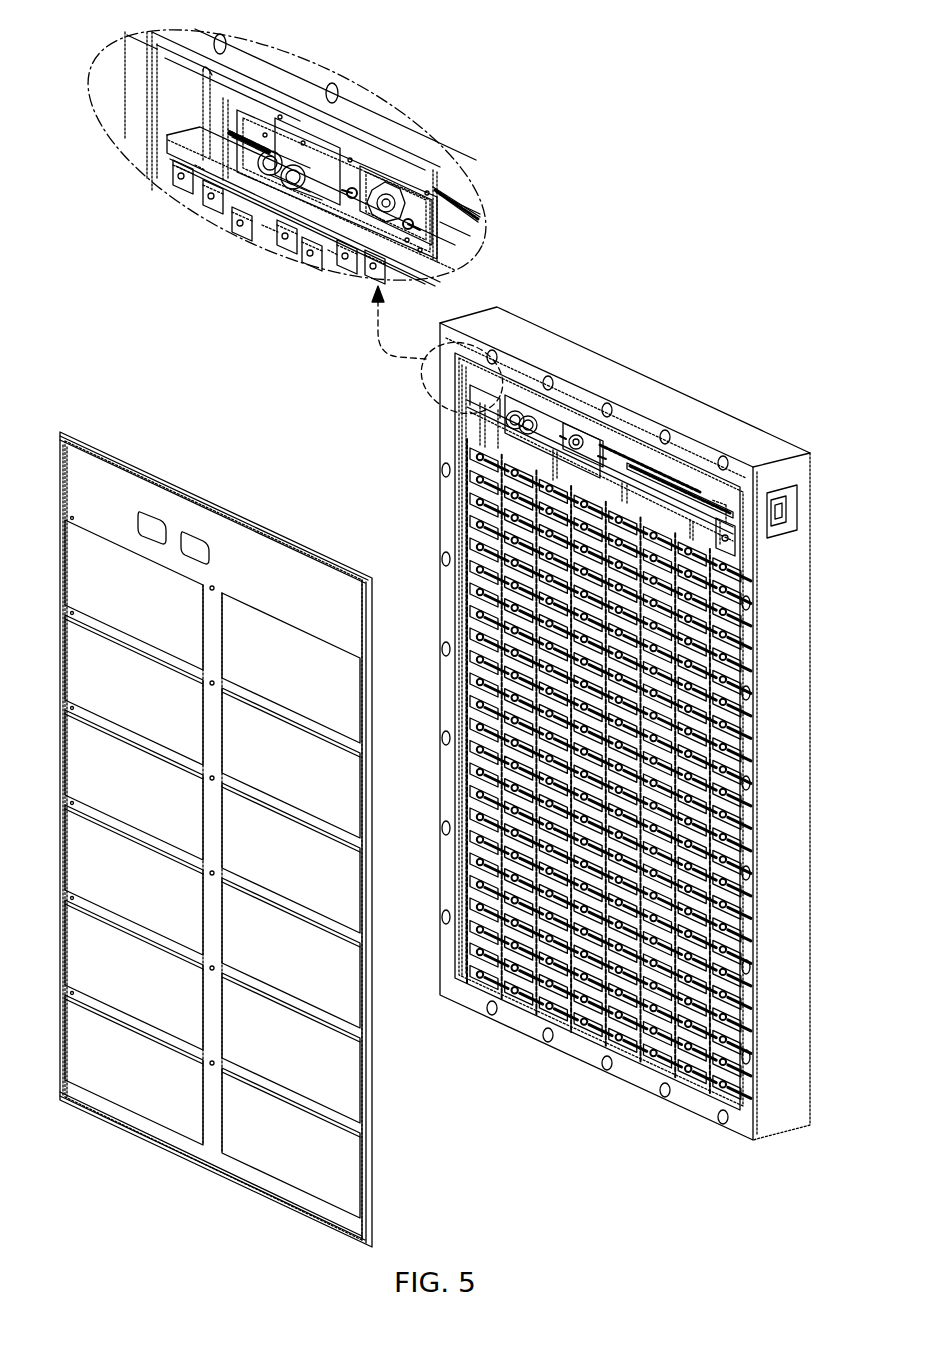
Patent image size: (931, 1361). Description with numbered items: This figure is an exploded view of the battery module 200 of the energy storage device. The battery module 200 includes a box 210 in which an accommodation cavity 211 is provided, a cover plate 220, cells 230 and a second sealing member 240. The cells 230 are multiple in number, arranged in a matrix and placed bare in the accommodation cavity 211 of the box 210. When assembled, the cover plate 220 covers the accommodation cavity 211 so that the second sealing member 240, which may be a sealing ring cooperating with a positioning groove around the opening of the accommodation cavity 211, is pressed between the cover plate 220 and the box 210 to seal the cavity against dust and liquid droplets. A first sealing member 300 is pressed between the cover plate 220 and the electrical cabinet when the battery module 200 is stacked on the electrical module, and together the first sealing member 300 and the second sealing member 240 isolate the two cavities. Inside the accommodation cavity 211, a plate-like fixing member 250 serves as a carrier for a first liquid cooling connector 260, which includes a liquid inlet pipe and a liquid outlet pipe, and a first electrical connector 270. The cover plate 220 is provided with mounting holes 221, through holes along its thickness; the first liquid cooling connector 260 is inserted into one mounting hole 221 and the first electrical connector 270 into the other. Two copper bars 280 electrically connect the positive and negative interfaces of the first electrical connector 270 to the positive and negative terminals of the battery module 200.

The battery module 200 is at (625, 716).
The box 210 is at (557, 357).
The accommodation cavity 211 is at (707, 490).
The cover plate 220 is at (212, 828).
The mounting hole 221 is at (197, 543).
The cell 230 is at (727, 545).
The second sealing member 240 is at (148, 156).
The fixing member 250 is at (355, 165).
The first liquid cooling connector 260 is at (307, 163).
The first electrical connector 270 is at (400, 202).
The copper bar 280 is at (233, 137).
The first sealing member 300 is at (240, 832).